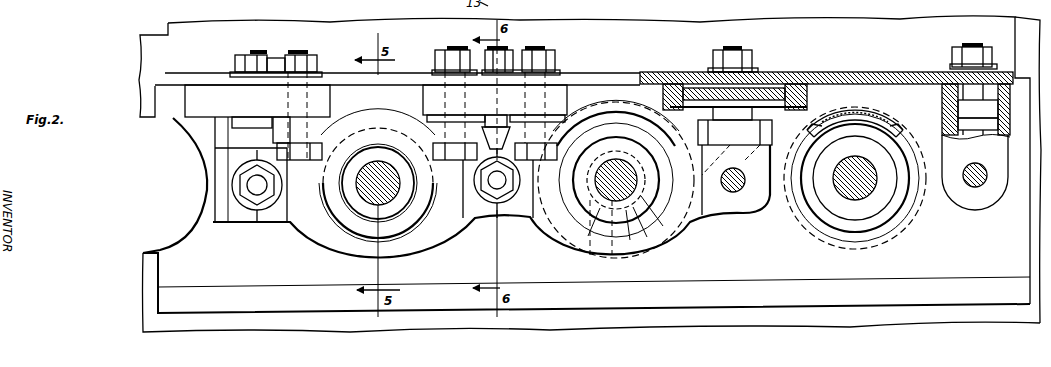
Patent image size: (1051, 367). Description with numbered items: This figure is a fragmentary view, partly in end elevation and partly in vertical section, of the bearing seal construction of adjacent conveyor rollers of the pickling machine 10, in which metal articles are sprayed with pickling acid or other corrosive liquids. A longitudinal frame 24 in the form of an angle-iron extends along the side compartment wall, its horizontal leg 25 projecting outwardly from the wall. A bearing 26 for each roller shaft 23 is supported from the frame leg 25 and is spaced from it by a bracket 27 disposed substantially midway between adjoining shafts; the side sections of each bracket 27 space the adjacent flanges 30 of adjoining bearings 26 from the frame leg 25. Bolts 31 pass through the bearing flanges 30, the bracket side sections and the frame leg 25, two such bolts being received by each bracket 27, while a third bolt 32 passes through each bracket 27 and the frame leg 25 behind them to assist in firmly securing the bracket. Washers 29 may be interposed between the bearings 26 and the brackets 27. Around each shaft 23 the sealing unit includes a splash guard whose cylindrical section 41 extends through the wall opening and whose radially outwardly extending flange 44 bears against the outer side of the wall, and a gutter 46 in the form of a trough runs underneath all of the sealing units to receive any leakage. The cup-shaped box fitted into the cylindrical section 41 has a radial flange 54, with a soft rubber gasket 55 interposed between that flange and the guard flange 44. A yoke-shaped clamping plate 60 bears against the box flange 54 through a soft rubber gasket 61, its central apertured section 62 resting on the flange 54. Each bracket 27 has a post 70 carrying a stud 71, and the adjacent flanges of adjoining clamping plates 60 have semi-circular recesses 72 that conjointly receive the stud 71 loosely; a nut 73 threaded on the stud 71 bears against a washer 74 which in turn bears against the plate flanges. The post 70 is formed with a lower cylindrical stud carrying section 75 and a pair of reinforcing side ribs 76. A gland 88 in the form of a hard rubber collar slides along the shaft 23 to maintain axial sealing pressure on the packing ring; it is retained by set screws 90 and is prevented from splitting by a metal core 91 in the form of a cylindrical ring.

The pickling machine 10 is at (138, 274).
The roller shaft 23 is at (381, 172).
The longitudinal frame 24 is at (162, 25).
The horizontal leg 25 is at (200, 76).
The bearing 26 is at (350, 228).
The bracket 27 is at (180, 112).
The washer 29 is at (437, 113).
The flange 30 is at (274, 135).
The bolt 31 is at (292, 50).
The third bolt 32 is at (250, 52).
The cylindrical section 41 is at (858, 114).
The flange 44 is at (882, 118).
The gutter 46 is at (670, 290).
The flange 54 is at (843, 226).
The soft rubber gasket 55 is at (820, 114).
The clamping plate 60 is at (430, 246).
The soft rubber gasket 61 is at (815, 226).
The central apertured section 62 is at (332, 218).
The post 70 is at (236, 226).
The stud 71 is at (250, 188).
The semi-circular recess 72 is at (725, 170).
The nut 73 is at (248, 200).
The washer 74 is at (252, 177).
The cylindrical stud carrying section 75 is at (757, 196).
The reinforcing side rib 76 is at (702, 135).
The gland 88 is at (630, 228).
The set screw 90 is at (640, 124).
The metal core 91 is at (612, 236).